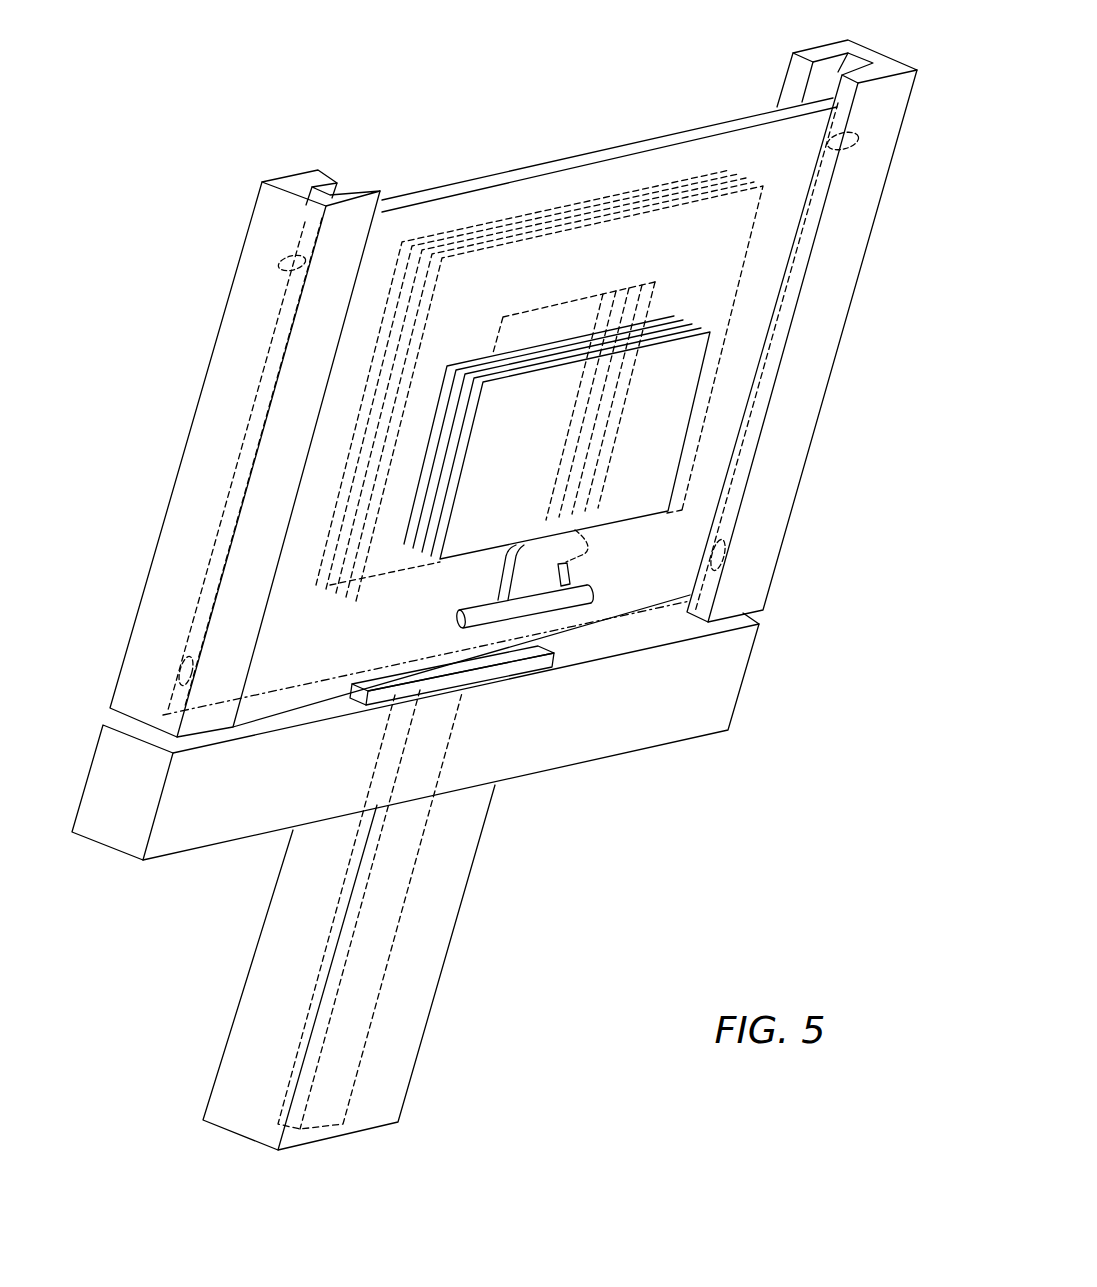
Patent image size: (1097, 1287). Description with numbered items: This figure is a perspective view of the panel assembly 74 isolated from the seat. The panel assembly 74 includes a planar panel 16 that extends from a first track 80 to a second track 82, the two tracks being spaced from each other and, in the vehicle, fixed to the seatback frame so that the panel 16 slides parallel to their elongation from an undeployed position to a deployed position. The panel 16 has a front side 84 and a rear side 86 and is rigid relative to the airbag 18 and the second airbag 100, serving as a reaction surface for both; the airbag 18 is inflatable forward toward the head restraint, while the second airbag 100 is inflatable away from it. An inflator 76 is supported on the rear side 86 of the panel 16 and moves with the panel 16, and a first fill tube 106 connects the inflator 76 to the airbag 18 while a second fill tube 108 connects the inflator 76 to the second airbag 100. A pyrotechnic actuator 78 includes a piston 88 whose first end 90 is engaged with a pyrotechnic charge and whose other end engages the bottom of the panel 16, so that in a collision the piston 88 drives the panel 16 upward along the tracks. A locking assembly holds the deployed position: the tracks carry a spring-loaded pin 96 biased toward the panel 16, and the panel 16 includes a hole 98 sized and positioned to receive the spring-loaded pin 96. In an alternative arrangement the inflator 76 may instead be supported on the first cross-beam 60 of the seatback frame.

The panel assembly 74 is at (513, 88).
The panel 16 is at (641, 148).
The front side 84 is at (500, 381).
The spring-loaded pin 96 is at (280, 265).
The rear side 86 is at (777, 164).
The airbag 18 is at (745, 258).
The second track 82 is at (822, 331).
The second airbag 100 is at (670, 413).
The hole 98 is at (180, 662).
The first fill tube 106 is at (592, 558).
The second fill tube 108 is at (497, 572).
The inflator 76 is at (575, 607).
The first end 90 is at (530, 665).
The first cross-beam 60 is at (605, 760).
The actuator 78 is at (402, 920).
The piston 88 is at (448, 925).
The first track 80 is at (205, 460).